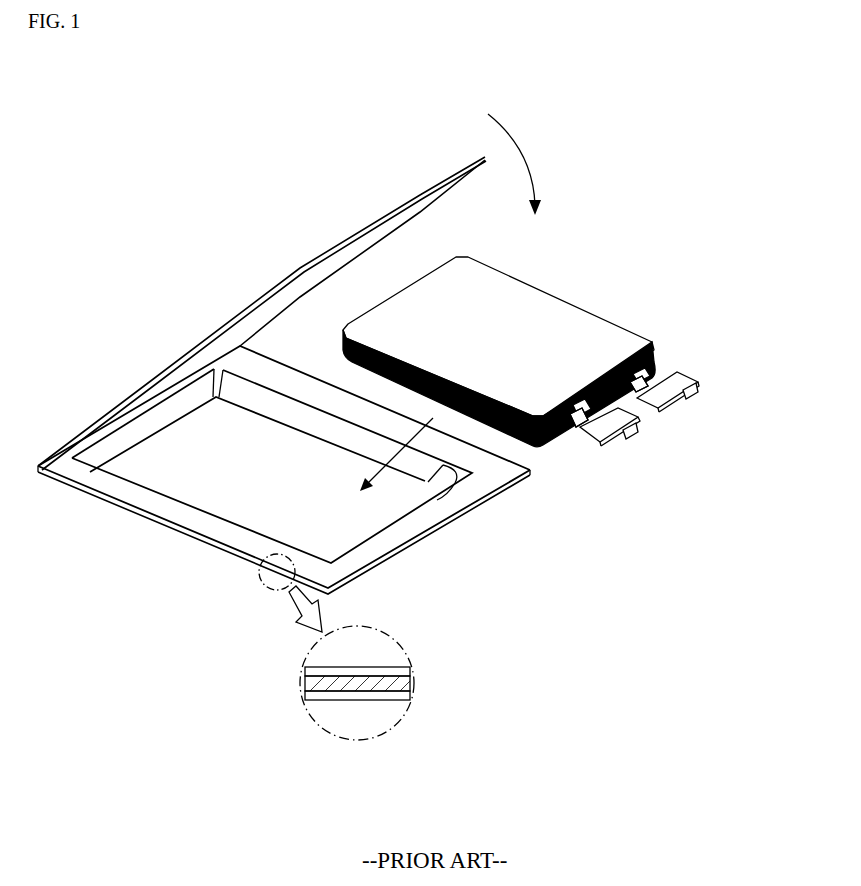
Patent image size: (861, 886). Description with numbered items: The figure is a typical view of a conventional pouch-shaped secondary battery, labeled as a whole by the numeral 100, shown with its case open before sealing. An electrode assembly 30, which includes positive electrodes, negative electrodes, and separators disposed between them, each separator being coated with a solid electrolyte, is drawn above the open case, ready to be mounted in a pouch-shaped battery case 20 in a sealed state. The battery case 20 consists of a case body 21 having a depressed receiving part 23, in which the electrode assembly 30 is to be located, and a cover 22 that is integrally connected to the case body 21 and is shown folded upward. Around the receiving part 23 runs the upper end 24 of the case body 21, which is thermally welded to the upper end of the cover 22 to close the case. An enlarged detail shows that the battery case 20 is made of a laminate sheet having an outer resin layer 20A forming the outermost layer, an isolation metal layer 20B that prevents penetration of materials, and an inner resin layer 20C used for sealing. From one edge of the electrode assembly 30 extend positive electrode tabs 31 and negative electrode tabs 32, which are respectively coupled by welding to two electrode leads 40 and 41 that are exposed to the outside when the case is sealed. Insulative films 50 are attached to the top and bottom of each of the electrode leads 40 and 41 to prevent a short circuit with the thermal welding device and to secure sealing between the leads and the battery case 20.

The secondary battery (prior art) 100 is at (86, 157).
The pouch-shaped battery case 20 is at (125, 349).
The case body 21 is at (212, 545).
The cover 22 is at (310, 262).
The depressed receiving part 23 is at (165, 478).
The upper end of the case body 24 is at (412, 528).
The outer resin layer 20A is at (397, 697).
The isolation metal layer 20B is at (403, 683).
The inner resin layer 20C is at (397, 668).
The electrode assembly 30 is at (570, 322).
The positive electrode tabs 31 is at (660, 366).
The negative electrode tabs 32 is at (574, 432).
The electrode lead 40 is at (698, 379).
The electrode lead 41 is at (625, 442).
The insulative films 50 is at (632, 435).